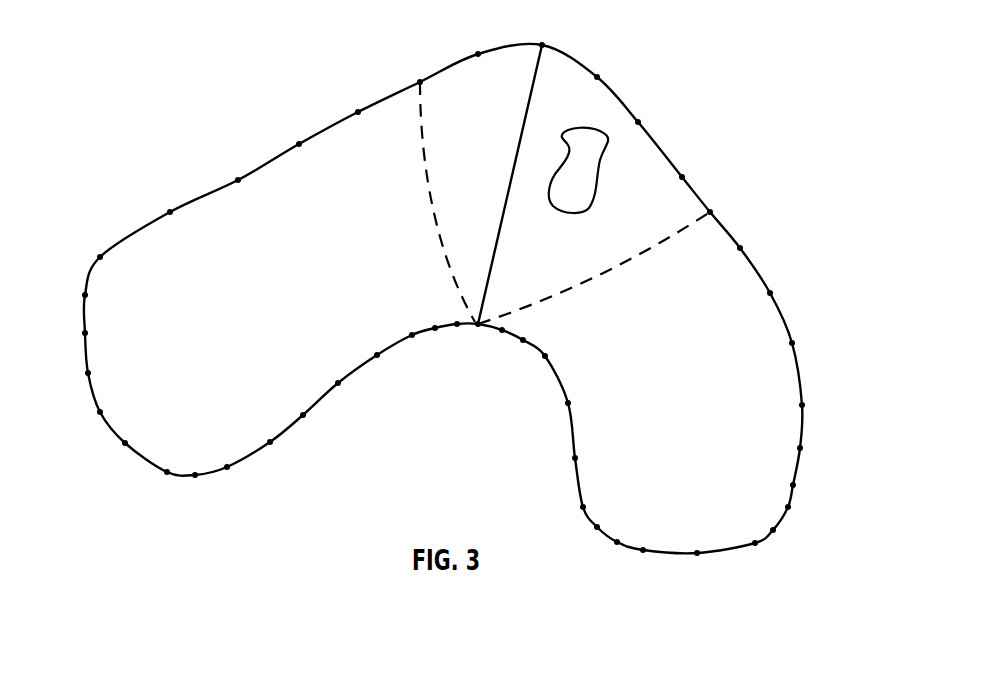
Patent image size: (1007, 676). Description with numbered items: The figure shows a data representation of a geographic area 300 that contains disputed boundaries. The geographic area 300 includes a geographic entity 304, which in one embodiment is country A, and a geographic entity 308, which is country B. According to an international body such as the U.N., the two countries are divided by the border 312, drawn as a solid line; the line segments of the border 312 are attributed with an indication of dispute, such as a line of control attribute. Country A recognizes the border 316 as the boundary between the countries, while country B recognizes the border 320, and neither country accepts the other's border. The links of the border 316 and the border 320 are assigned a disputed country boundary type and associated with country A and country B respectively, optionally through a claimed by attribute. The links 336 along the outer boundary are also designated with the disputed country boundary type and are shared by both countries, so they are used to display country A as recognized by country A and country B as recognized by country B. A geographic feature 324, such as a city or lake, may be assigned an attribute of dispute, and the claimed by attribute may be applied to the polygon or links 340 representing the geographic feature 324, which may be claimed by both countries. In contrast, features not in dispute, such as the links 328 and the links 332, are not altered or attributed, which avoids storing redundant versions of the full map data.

The geographic area 300 is at (748, 130).
The geographic entity 304 is at (150, 260).
The geographic entity 308 is at (757, 335).
The border 312 is at (533, 92).
The border 316 is at (663, 245).
The border 320 is at (423, 175).
The geographic feature 324 is at (570, 192).
The links 328 is at (276, 158).
The links 332 is at (800, 378).
The links 336 is at (504, 43).
The links 340 is at (605, 158).